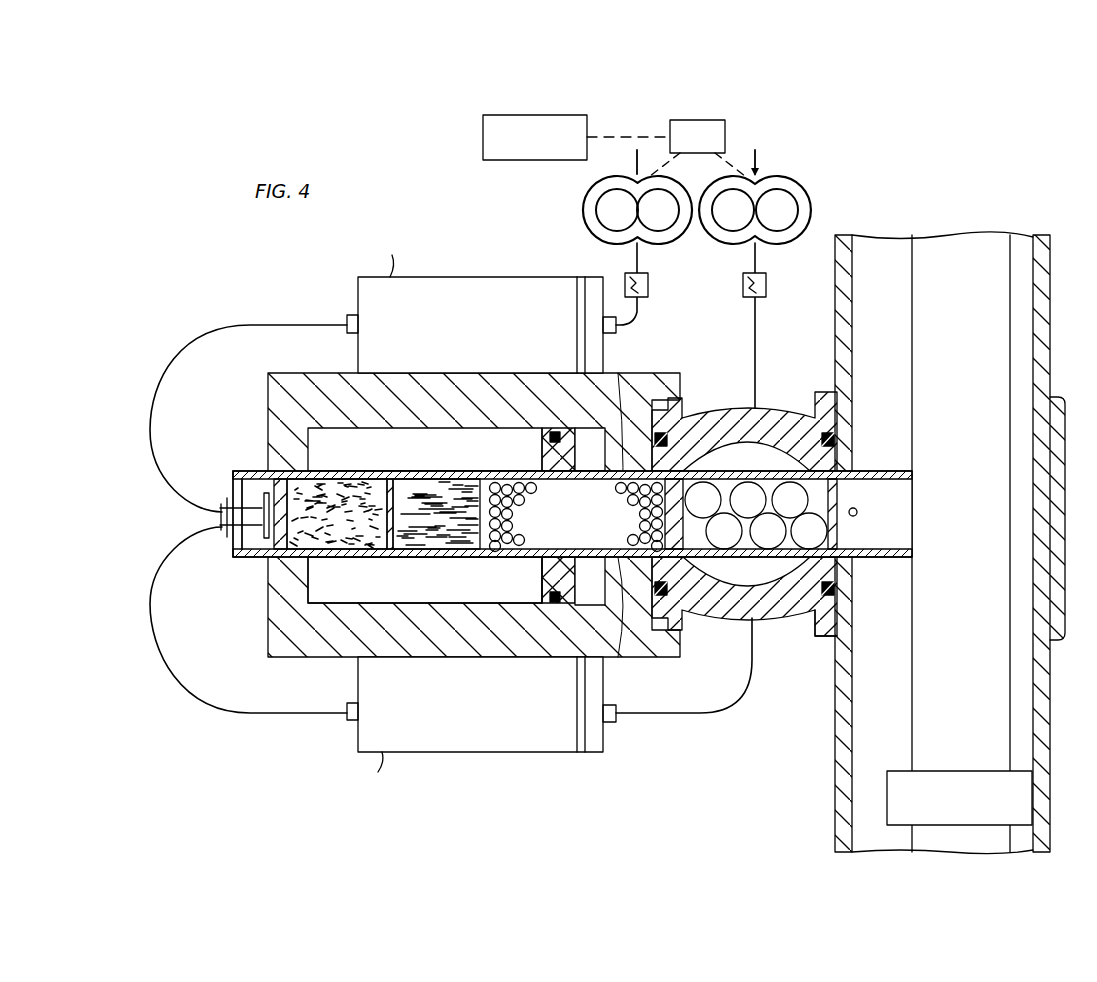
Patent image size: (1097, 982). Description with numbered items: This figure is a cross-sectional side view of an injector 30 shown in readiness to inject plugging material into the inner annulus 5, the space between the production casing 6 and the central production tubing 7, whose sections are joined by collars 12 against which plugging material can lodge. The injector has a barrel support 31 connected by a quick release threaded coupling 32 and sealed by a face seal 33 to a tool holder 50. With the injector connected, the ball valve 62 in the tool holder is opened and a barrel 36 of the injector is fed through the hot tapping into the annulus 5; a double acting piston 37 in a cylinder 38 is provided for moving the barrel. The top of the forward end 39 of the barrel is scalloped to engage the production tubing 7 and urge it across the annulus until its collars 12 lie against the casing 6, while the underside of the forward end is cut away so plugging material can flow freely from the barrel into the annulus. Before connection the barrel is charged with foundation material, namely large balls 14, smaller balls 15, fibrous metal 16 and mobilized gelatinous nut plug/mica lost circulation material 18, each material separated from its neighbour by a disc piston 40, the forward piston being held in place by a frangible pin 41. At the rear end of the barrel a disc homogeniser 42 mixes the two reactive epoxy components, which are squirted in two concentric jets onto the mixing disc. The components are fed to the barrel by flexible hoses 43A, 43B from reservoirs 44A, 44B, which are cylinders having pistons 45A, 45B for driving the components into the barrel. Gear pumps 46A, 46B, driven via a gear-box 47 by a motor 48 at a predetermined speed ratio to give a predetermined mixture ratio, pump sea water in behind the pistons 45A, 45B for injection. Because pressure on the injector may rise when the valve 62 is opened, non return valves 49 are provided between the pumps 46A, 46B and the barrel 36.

The inner annulus 5 is at (870, 752).
The production casing 6 is at (852, 828).
The production tubing 7 is at (912, 336).
The collars 12 is at (1032, 815).
The balls 14 is at (822, 544).
The smaller balls 15 is at (512, 490).
The fibrous metal 16 is at (447, 487).
The lost circulation material 18 is at (347, 486).
The injector 30 is at (228, 310).
The barrel support 31 is at (268, 388).
The quick release threaded coupling 32 is at (668, 400).
The face seal 33 is at (650, 604).
The barrel 36 is at (607, 606).
The double acting piston 37 is at (542, 580).
The cylinder 38 is at (376, 604).
The forward end of the barrel 39 is at (868, 472).
The disc piston 40 is at (268, 560).
The frangible pin 41 is at (857, 510).
The disc homogeniser 42 is at (258, 488).
The flexible hose 43A is at (166, 370).
The flexible hose 43B is at (172, 686).
The reservoir 44A is at (470, 277).
The reservoir 44B is at (470, 752).
The piston 45A is at (580, 278).
The piston 45B is at (585, 752).
The gear pump 46A is at (586, 200).
The gear pump 46B is at (804, 200).
The gear-box 47 is at (671, 148).
The motor 48 is at (535, 137).
The non return valves 49 is at (743, 289).
The tool holder 50 is at (765, 412).
The ball valve 62 is at (785, 615).